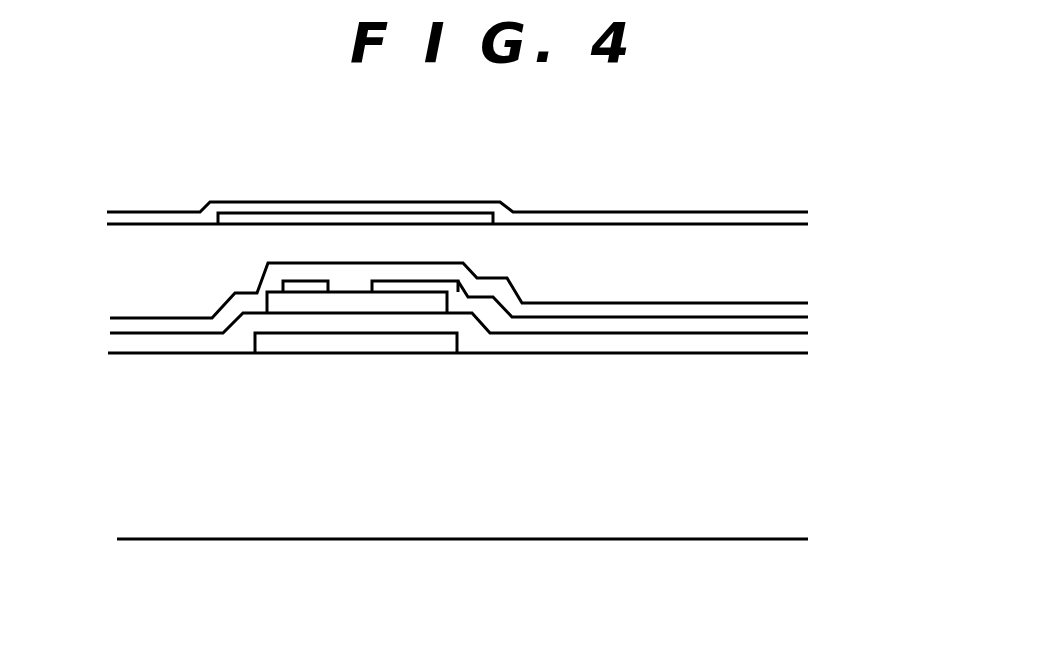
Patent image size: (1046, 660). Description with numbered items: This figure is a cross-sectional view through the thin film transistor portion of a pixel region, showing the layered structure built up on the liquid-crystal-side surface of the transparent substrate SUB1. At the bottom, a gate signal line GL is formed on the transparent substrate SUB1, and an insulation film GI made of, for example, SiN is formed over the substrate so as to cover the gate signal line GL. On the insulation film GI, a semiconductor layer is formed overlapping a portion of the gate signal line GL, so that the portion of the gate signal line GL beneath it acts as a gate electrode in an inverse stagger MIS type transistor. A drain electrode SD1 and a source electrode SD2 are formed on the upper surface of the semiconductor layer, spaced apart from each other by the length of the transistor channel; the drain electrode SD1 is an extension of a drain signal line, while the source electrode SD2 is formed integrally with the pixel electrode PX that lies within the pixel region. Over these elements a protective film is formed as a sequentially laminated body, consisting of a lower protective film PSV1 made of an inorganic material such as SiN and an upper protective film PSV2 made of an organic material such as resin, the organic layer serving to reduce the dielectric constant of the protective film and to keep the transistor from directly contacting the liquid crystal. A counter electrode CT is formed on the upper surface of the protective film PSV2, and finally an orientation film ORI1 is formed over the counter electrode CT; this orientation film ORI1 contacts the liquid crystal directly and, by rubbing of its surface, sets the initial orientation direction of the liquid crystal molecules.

The counter electrode CT is at (242, 220).
The drain electrode SD1 is at (298, 282).
The source electrode SD2 is at (400, 283).
The orientation film ORI1 is at (602, 216).
The protective film PSV2 is at (140, 274).
The protective film PSV1 is at (127, 328).
The pixel electrode PX is at (800, 325).
The insulation film GI is at (788, 343).
The gate signal line GL is at (358, 343).
The transparent substrate SUB1 is at (788, 480).